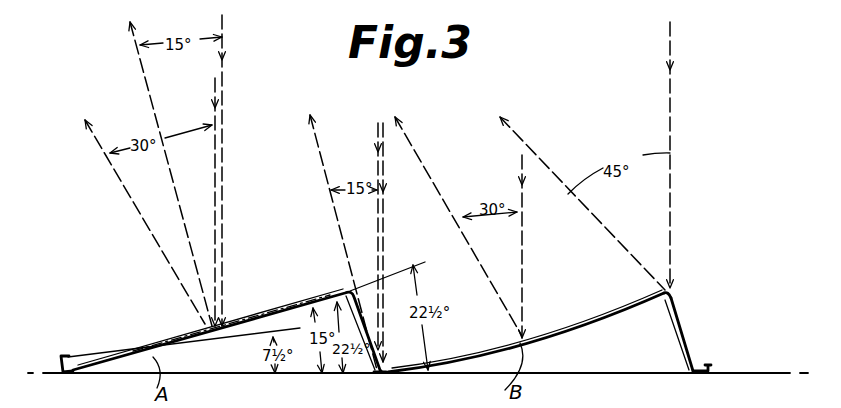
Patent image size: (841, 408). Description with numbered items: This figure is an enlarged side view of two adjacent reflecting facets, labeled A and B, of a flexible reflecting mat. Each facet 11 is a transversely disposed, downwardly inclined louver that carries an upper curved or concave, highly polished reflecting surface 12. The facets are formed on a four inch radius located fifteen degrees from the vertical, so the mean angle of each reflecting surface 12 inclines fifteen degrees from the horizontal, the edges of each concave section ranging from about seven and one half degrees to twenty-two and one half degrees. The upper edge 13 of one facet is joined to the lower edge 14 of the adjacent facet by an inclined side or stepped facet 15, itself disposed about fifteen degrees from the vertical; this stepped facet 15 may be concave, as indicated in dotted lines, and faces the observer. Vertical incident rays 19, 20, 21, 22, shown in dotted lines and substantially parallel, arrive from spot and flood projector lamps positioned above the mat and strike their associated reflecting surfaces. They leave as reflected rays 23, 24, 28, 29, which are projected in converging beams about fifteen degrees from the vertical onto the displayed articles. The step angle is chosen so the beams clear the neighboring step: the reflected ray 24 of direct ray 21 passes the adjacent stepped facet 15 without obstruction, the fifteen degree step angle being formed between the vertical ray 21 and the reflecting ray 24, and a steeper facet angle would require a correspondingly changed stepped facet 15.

The louver facet 11 is at (83, 373).
The reflecting surface 12 is at (255, 320).
The upper edge 13 is at (672, 292).
The lower edge 14 is at (380, 373).
The stepped facet 15 is at (62, 357).
The vertical incident ray 19 is at (673, 100).
The vertical incident ray 20 is at (525, 238).
The vertical incident ray 21 is at (383, 200).
The vertical incident ray 22 is at (230, 63).
The reflected ray 23 is at (123, 197).
The reflected ray 24 is at (320, 172).
The reflected ray 28 is at (413, 143).
The reflected ray 29 is at (517, 127).